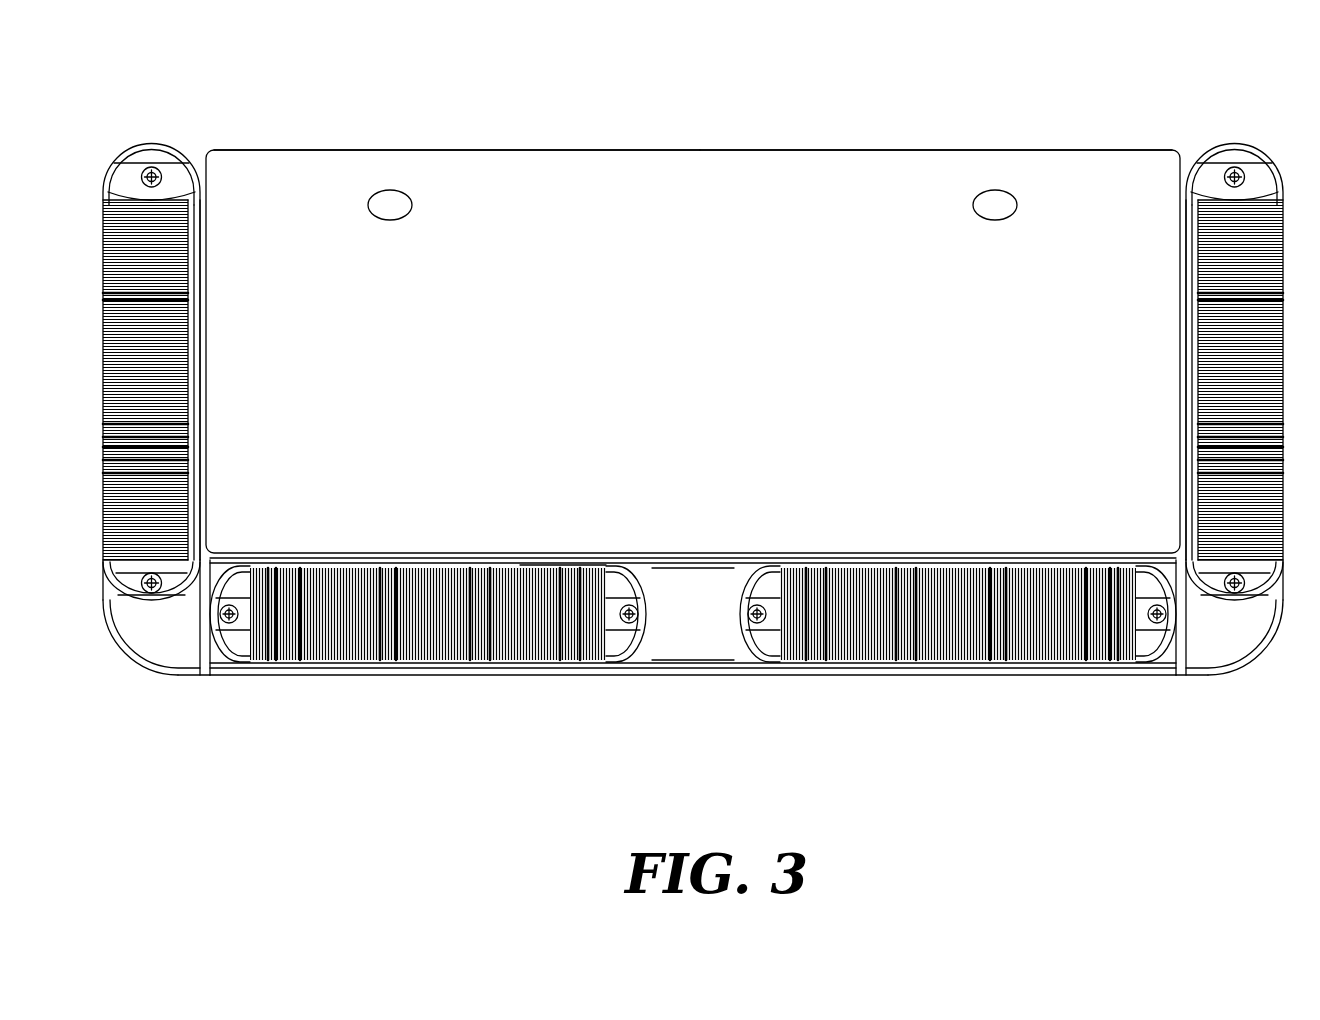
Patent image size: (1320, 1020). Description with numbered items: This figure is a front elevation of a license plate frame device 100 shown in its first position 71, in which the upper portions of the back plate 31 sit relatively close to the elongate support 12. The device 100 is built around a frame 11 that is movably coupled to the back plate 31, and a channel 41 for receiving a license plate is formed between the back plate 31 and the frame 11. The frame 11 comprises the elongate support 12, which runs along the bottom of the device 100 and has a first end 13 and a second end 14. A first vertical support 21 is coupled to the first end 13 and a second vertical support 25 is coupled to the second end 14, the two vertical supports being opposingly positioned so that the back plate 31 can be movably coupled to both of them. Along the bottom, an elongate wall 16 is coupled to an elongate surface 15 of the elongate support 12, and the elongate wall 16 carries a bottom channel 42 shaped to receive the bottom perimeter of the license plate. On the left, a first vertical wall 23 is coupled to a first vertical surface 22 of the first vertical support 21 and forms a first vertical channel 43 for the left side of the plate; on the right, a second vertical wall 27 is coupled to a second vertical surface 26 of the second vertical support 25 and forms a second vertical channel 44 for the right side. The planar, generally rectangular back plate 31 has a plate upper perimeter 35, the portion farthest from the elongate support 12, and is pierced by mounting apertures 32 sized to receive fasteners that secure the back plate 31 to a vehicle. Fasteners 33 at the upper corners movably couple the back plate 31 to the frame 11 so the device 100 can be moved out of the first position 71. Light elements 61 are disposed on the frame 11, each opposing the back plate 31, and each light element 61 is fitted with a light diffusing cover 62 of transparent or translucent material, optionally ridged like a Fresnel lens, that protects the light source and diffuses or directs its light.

The license plate frame device 100 is at (383, 105).
The frame 11 is at (1034, 676).
The elongate support 12 is at (729, 650).
The first end 13 is at (217, 655).
The second end 14 is at (1171, 658).
The elongate surface 15 is at (690, 636).
The elongate wall 16 is at (548, 562).
The first vertical support 21 is at (132, 610).
The first vertical surface 22 is at (163, 630).
The first vertical wall 23 is at (208, 292).
The second vertical support 25 is at (1250, 606).
The second vertical surface 26 is at (1217, 632).
The second vertical wall 27 is at (1180, 300).
The back plate 31 is at (632, 262).
The mounting aperture 32 is at (412, 212).
The fastener 33 is at (148, 186).
The plate upper perimeter 35 is at (825, 150).
The channel 41 is at (218, 398).
The bottom channel 42 is at (680, 559).
The first vertical channel 43 is at (212, 345).
The second vertical channel 44 is at (1175, 398).
The light element 61 is at (100, 215).
The light diffusing cover 62 is at (170, 500).
The first position 71 is at (570, 140).